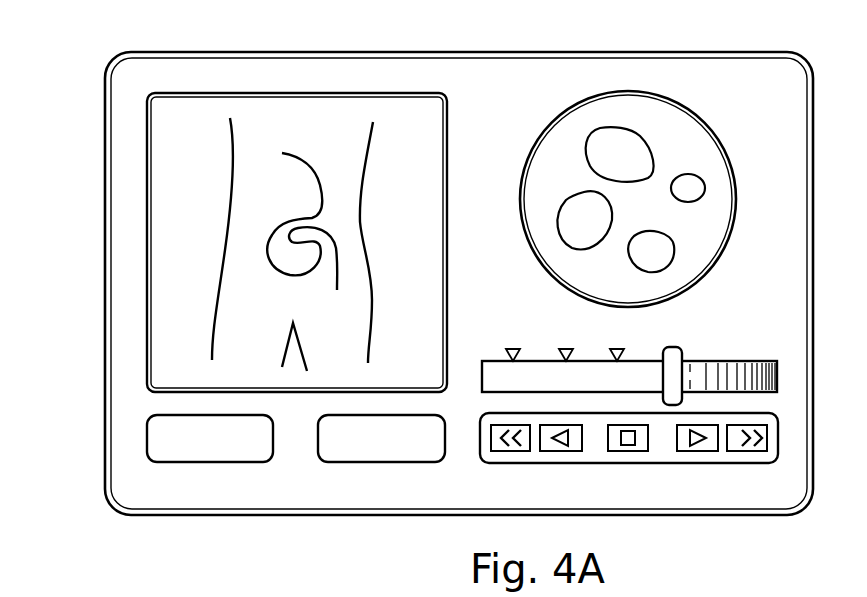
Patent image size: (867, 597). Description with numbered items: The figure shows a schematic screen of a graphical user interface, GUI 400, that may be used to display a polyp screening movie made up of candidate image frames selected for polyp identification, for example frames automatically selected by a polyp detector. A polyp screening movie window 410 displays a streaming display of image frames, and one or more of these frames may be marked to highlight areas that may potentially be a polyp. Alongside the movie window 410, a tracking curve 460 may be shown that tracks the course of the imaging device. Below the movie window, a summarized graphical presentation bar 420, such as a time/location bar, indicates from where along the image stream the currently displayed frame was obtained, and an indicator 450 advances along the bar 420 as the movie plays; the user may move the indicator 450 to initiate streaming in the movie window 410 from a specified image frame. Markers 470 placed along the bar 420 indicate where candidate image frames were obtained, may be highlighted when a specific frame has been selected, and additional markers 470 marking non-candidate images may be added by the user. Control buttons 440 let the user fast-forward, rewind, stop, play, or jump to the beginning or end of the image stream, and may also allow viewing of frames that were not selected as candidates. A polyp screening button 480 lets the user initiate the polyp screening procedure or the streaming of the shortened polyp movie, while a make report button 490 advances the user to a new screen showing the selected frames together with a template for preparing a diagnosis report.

The GUI 400 is at (98, 80).
The polyp screening movie window 410 is at (695, 98).
The summarized graphical presentation bar 420 is at (728, 362).
The control buttons 440 is at (648, 463).
The indicator 450 is at (673, 347).
The tracking curve 460 is at (322, 183).
The markers 470 is at (617, 349).
The polyp screening button 480 is at (195, 462).
The make report button 490 is at (367, 462).